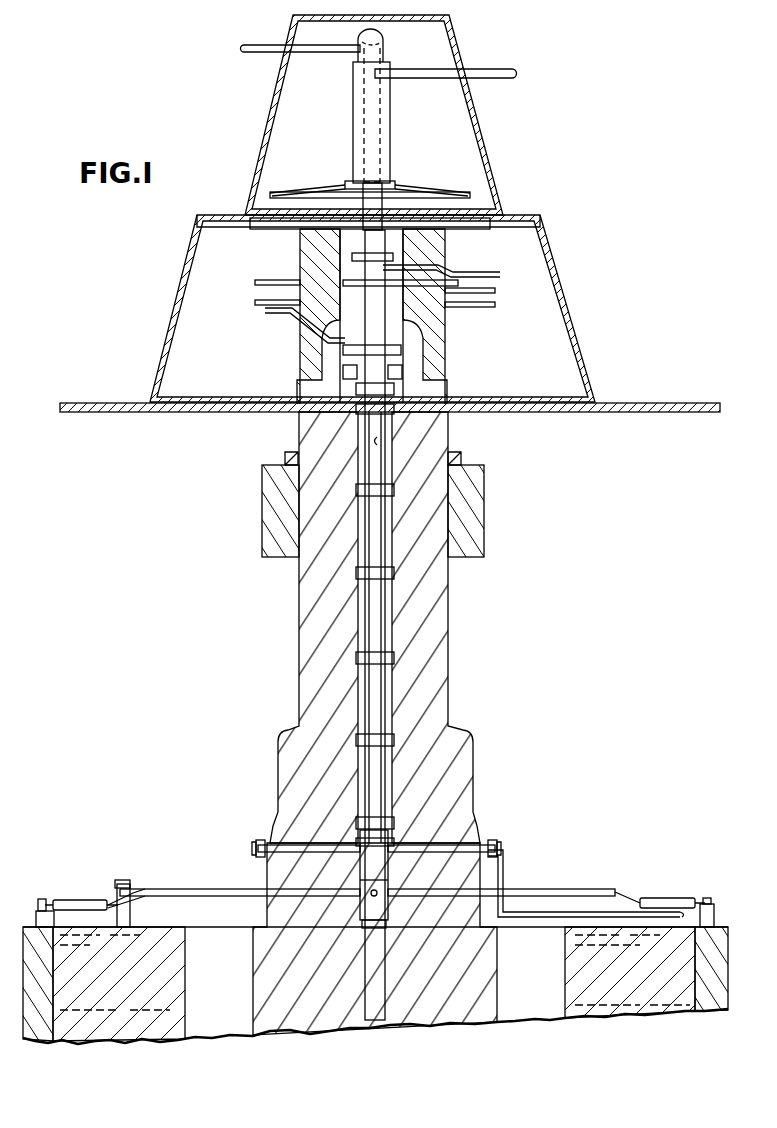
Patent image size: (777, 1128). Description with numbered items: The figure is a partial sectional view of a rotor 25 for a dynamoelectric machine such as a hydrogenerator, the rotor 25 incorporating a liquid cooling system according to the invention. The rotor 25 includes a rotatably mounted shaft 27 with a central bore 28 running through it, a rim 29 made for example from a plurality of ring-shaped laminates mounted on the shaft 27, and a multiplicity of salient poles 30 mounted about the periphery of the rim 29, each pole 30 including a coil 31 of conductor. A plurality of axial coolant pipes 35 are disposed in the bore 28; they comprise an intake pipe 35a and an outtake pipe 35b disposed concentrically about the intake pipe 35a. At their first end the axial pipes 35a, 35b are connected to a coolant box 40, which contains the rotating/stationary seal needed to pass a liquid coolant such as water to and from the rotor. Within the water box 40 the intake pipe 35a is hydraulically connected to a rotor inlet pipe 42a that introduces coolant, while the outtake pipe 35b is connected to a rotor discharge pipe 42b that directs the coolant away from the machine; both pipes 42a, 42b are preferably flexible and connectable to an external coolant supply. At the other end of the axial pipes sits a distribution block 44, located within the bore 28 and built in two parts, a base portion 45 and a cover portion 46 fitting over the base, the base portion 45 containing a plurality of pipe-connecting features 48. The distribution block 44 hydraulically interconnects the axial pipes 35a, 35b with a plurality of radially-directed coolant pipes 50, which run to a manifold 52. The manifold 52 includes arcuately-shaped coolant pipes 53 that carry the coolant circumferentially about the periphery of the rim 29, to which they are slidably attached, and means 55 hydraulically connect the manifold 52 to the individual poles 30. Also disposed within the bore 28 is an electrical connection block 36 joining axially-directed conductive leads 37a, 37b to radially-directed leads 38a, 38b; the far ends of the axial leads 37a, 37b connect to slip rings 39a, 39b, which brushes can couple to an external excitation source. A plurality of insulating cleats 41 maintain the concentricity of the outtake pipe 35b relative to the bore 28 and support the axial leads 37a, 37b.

The rotor 25 is at (251, 627).
The shaft 27 is at (458, 594).
The central bore 28 is at (385, 443).
The rim 29 is at (129, 1028).
The salient poles 30 is at (39, 1034).
The coil 31 is at (715, 911).
The axial coolant pipes 35 is at (366, 600).
The intake pipe 35a is at (385, 44).
The outtake pipe 35b is at (386, 96).
The electrical connection block 36 is at (392, 840).
The axial lead 37a is at (387, 620).
The axial lead 37b is at (362, 680).
The radial lead 38a is at (448, 845).
The radial lead 38b is at (298, 847).
The slip ring 39a is at (488, 282).
The slip ring 39b is at (259, 314).
The coolant box 40 is at (354, 98).
The insulating cleats 41 is at (392, 573).
The rotor inlet pipe 42a is at (263, 53).
The rotor discharge pipe 42b is at (491, 68).
The distribution block 44 is at (389, 905).
The base portion 45 is at (360, 882).
The cover portion 46 is at (366, 926).
The pipe-connecting features 48 is at (362, 898).
The radial coolant pipes 50 is at (186, 889).
The manifold 52 is at (116, 884).
The arcuately-shaped coolant pipes 53 is at (125, 880).
The means for hydraulically connecting 55 is at (85, 899).